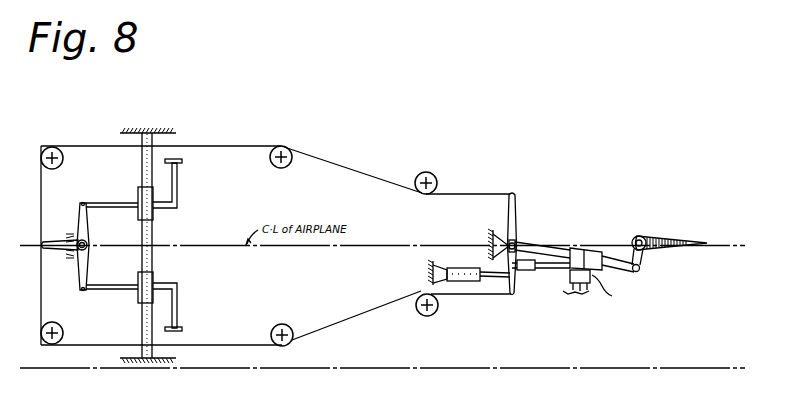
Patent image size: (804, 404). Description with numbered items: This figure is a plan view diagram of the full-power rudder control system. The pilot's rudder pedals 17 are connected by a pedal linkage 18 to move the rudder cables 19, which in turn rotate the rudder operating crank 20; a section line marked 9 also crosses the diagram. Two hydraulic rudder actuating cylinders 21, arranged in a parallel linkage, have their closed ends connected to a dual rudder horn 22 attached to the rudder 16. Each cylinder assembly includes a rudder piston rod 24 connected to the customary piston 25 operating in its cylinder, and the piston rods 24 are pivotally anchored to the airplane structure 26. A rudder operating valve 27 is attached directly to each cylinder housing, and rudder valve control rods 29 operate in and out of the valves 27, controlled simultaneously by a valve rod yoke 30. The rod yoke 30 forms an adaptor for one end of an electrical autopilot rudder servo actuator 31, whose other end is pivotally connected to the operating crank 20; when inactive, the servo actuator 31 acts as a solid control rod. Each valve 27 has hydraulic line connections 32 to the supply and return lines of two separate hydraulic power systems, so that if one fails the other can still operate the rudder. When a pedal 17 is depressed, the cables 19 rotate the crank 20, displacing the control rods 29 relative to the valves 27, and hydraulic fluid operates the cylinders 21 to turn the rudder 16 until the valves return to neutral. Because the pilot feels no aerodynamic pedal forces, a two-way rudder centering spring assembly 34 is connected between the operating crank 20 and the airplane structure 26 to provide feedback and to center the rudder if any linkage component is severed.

The section line 9- 9 is at (25, 316).
The rudder 16 is at (660, 237).
The pilot's rudder pedals 17 is at (179, 181).
The pedal linkage 18 is at (106, 180).
The rudder cables 19 is at (338, 166).
The rudder operating crank 20 is at (513, 207).
The hydraulic rudder actuating cylinders 21 is at (597, 254).
The dual rudder horn 22 is at (652, 256).
The rudder piston rod 24 is at (540, 247).
The piston 25 is at (585, 245).
The airplane structure 26 is at (492, 233).
The rudder operating valve 27 is at (614, 293).
The rudder valve control rods 29 is at (557, 268).
The valve rod yoke 30 is at (545, 268).
The electrical autopilot rudder servo actuator 31 is at (527, 270).
The hydraulic line connections 32 is at (579, 296).
The two-way rudder centering spring assembly 34 is at (463, 281).